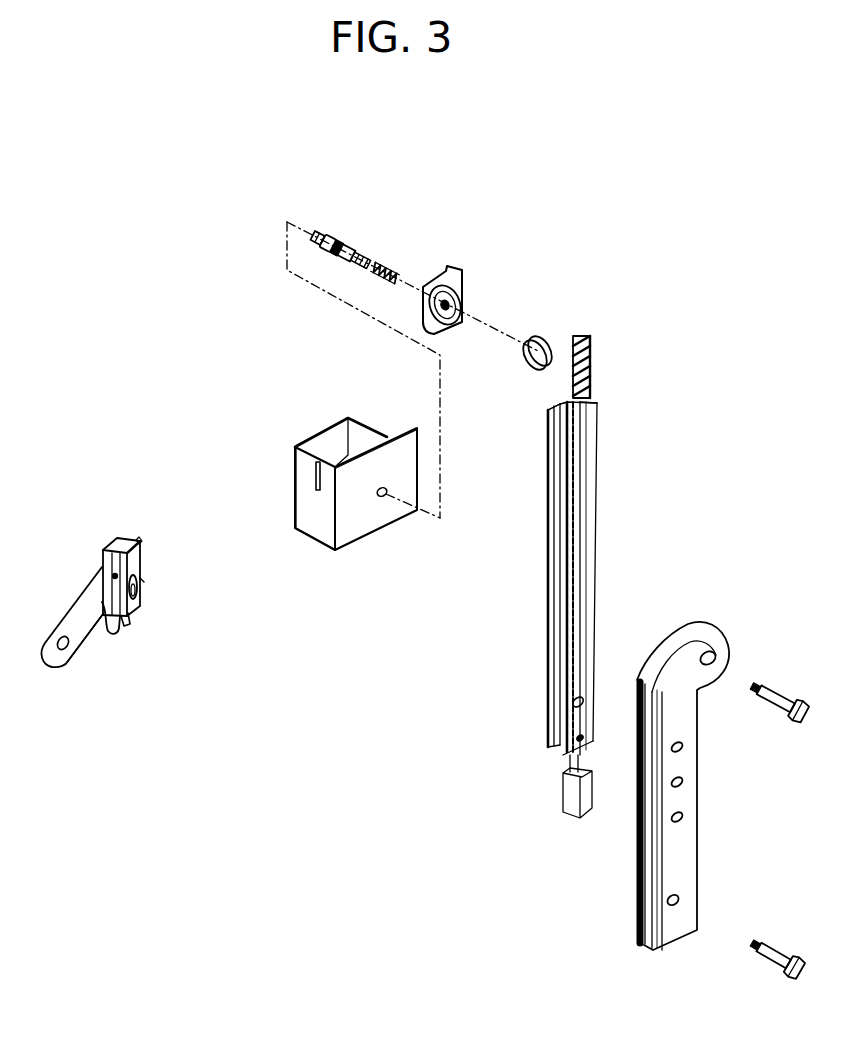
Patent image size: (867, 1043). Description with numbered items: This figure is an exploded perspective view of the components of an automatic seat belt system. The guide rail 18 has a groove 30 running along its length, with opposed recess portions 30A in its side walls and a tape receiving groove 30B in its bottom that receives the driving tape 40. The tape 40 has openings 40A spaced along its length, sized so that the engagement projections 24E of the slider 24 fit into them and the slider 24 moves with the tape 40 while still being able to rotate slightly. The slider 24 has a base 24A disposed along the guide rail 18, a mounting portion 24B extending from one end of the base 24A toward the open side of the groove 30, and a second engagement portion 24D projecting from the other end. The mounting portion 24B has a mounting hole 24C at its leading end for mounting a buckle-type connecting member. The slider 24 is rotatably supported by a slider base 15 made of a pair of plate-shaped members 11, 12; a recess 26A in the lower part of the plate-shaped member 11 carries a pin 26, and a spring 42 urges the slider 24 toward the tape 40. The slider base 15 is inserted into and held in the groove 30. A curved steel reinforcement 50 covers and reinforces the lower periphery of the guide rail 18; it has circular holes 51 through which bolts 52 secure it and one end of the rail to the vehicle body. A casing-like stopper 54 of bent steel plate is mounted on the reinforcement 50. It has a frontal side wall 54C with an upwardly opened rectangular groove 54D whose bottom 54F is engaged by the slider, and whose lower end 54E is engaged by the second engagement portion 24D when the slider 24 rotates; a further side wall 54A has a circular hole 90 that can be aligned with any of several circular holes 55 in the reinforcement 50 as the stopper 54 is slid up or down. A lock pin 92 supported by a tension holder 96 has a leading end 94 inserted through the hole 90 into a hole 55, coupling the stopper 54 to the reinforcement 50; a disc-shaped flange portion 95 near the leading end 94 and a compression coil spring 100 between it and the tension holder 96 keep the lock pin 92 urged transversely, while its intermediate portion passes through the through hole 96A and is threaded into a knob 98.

The plate-shaped member 11 is at (143, 548).
The plate-shaped member 12 is at (115, 537).
The slider base 15 is at (90, 522).
The guide rail 18 is at (597, 474).
The slider 24 is at (77, 590).
The base 24A is at (123, 619).
The mounting portion 24B is at (87, 637).
The mounting hole 24C is at (66, 653).
The second engagement portion 24D is at (108, 600).
The engagement projections 24E is at (136, 538).
The pin 26 is at (138, 593).
The recess 26A is at (140, 571).
The groove 30 is at (567, 422).
The recess portions 30A is at (568, 396).
The tape receiving groove 30B is at (594, 397).
The driving tape 40 is at (577, 337).
The openings 40A is at (590, 340).
The spring 42 is at (117, 575).
The reinforcement 50 is at (703, 793).
The circular holes 51 is at (717, 650).
The bolts 52 is at (790, 690).
The stopper 54 is at (374, 541).
The side wall 54A is at (396, 518).
The side wall 54C is at (320, 532).
The rectangular groove 54D is at (318, 458).
The end 54E is at (300, 538).
The bottom 54F is at (310, 488).
The circular holes 55 is at (683, 745).
The circular hole 90 is at (388, 489).
The lock pin 92 is at (354, 246).
The leading end 94 is at (322, 231).
The flange portion 95 is at (325, 246).
The tension holder 96 is at (470, 290).
The through hole 96A is at (450, 306).
The knob 98 is at (537, 336).
The compression coil spring 100 is at (397, 268).